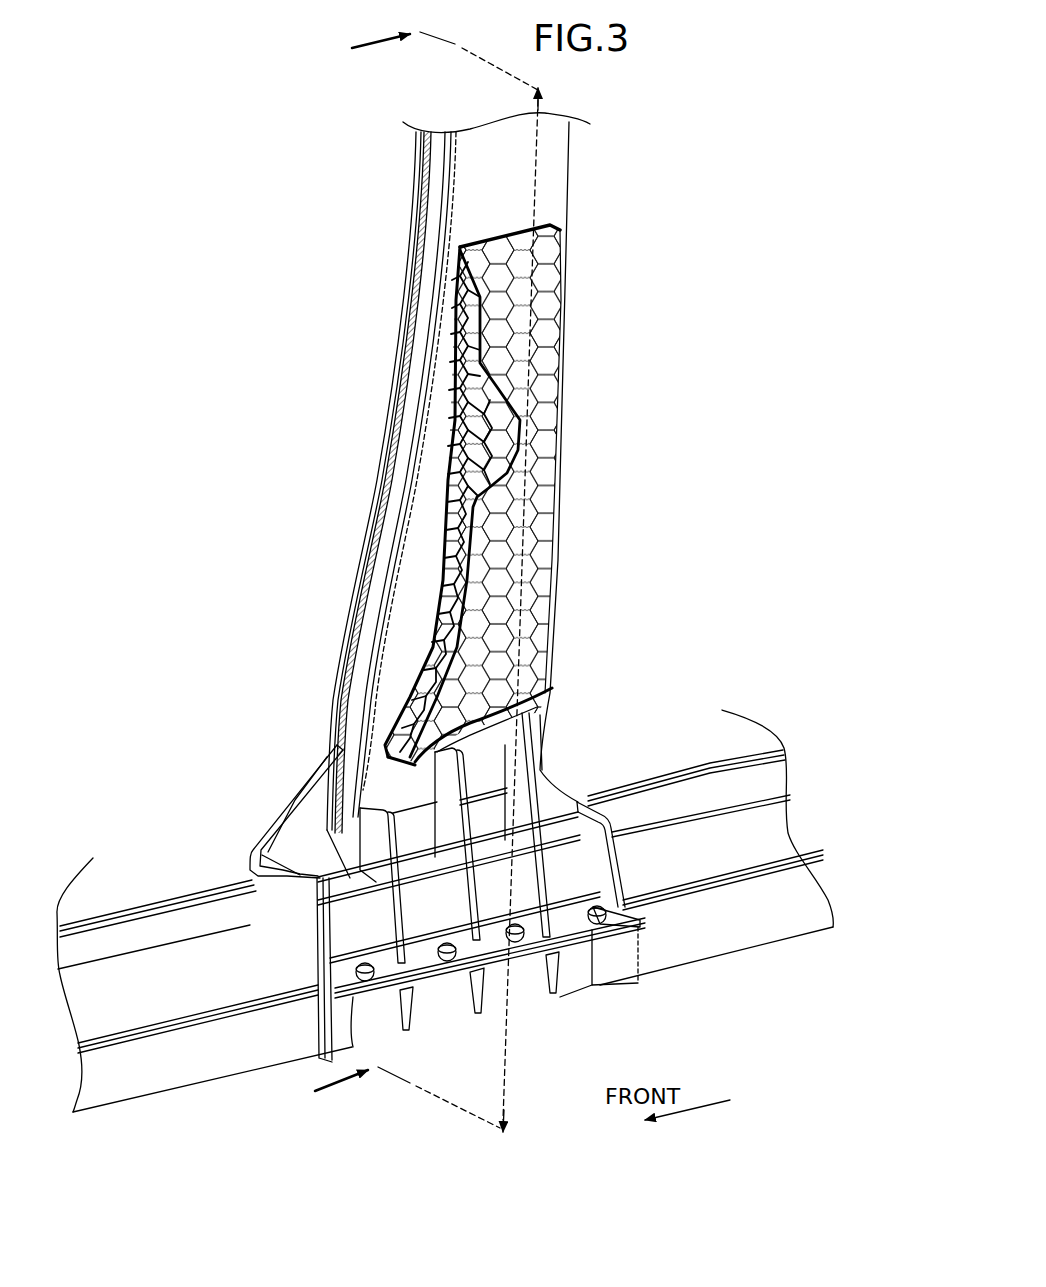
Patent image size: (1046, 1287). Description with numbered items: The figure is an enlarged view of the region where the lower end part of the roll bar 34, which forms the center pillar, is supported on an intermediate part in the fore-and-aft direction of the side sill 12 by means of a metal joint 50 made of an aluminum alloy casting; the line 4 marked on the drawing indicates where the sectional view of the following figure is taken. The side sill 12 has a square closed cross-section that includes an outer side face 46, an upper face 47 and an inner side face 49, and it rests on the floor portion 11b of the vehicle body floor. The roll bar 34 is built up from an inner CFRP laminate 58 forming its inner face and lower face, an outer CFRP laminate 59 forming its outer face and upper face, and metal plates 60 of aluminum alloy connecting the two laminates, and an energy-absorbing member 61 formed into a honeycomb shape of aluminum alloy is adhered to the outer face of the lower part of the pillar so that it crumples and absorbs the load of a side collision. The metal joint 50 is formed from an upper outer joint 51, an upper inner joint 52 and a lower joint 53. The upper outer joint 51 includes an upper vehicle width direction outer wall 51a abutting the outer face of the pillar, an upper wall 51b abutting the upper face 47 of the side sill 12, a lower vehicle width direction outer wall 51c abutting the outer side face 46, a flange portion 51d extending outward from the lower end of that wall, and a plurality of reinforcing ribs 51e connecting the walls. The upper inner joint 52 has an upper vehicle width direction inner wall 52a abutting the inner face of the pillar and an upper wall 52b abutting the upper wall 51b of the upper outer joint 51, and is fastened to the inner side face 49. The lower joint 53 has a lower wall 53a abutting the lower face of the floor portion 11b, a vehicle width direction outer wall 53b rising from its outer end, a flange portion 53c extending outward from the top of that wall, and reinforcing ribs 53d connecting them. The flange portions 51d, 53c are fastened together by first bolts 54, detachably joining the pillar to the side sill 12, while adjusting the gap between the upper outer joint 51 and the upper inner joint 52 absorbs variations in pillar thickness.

The line 4- 4 is at (413, 582).
The floor portion 11b is at (215, 1062).
The side sill 12 is at (172, 888).
The roll bar 34 is at (366, 463).
The outer side face 46 is at (148, 1000).
The upper face 47 is at (220, 916).
The inner side face 49 is at (103, 916).
The metal joint 50 is at (584, 774).
The upper outer joint 51 is at (630, 862).
The upper vehicle width direction outer wall 51a is at (487, 765).
The upper wall 51b is at (489, 850).
The lower vehicle width direction outer wall 51c is at (605, 879).
The flange portion 51d is at (636, 922).
The reinforcing ribs 51e is at (445, 825).
The upper inner joint 52 is at (304, 782).
The upper vehicle width direction inner wall 52a is at (303, 828).
The upper wall 52b is at (280, 857).
The lower joint 53 is at (581, 1003).
The lower wall 53a is at (388, 1042).
The vehicle width direction outer wall 53b is at (537, 997).
The flange portion 53c is at (641, 970).
The reinforcing ribs 53d is at (550, 970).
The first bolts 54 is at (445, 950).
The inner CFRP laminate 58 is at (398, 342).
The outer CFRP laminate 59 is at (415, 556).
The metal plate 60 is at (362, 595).
The energy-absorbing member 61 is at (547, 497).